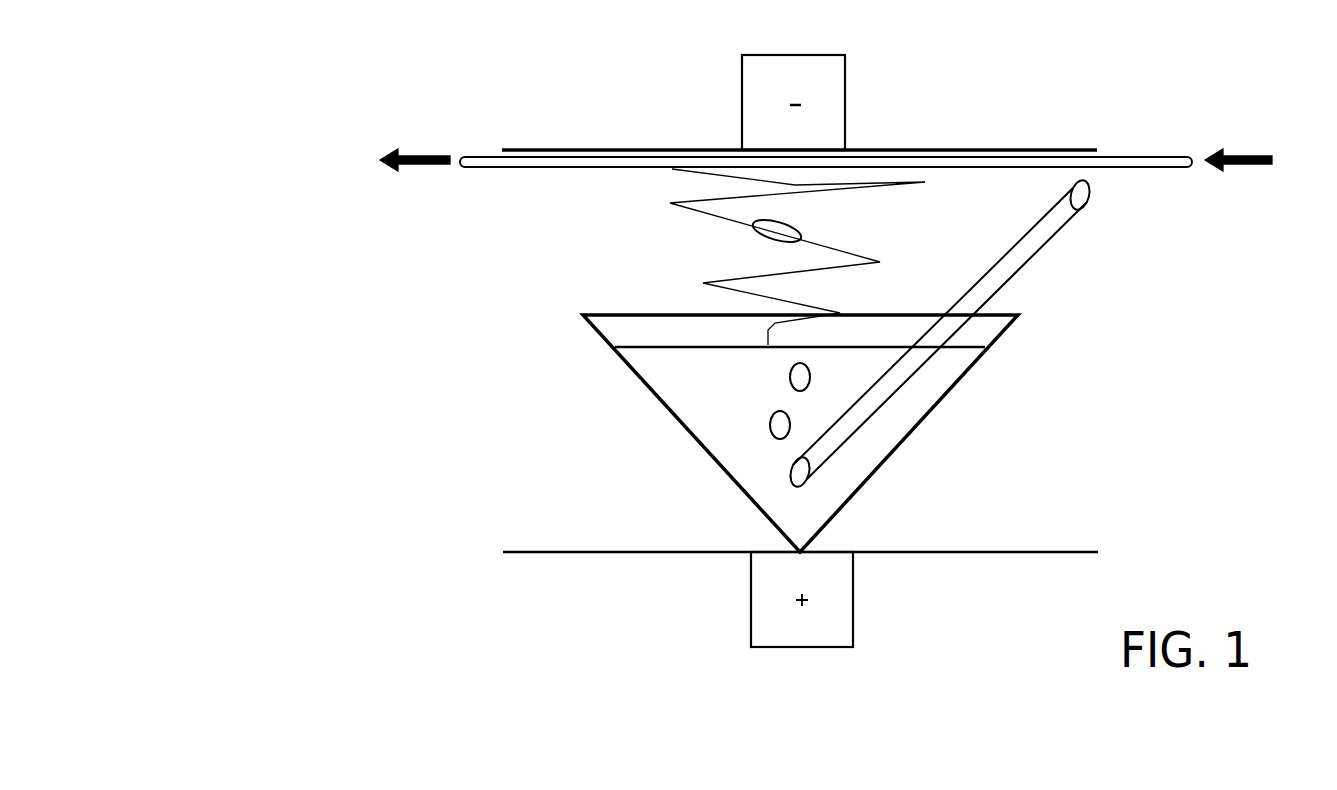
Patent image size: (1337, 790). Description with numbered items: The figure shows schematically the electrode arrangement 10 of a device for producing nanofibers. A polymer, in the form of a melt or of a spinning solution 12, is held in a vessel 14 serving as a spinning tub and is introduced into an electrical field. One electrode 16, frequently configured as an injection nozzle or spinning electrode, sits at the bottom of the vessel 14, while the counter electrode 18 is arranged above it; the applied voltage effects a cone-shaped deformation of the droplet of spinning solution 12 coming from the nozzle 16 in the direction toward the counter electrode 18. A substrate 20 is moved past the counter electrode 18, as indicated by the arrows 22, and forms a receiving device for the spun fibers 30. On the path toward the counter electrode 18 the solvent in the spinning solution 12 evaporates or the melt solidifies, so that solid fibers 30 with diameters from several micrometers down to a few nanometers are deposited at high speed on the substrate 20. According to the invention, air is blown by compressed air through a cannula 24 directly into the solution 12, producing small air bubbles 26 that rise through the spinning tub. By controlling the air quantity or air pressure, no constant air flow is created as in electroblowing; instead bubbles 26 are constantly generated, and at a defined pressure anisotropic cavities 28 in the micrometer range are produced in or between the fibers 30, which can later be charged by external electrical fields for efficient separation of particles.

The electrode arrangement 10 is at (368, 413).
The solution 12 is at (720, 393).
The vessel 14 is at (650, 326).
The electrode 16 is at (800, 553).
The counter electrode 18 is at (802, 148).
The substrate 20 is at (462, 157).
The arrows 22 is at (417, 170).
The cannula 24 is at (1010, 267).
The air bubbles 26 is at (769, 425).
The anisotropic cavities 28 is at (752, 233).
The spun fibers 30 is at (847, 250).